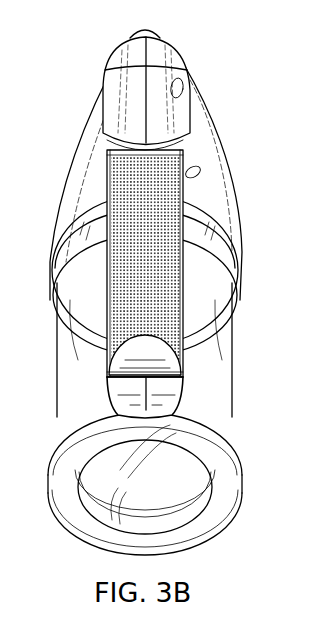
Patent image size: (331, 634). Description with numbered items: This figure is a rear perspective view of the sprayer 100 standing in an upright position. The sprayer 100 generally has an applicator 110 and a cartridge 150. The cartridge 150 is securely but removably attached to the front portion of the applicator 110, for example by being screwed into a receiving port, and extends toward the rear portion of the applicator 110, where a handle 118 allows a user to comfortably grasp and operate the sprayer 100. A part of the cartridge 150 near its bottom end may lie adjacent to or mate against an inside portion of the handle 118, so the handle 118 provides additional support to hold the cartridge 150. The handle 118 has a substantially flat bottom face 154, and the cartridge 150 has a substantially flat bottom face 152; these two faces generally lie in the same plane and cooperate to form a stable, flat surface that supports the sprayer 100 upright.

The sprayer 100 is at (78, 68).
The applicator 110 is at (205, 118).
The handle 118 is at (120, 184).
The cartridge 150 is at (232, 356).
The substantially flat bottom face 152 is at (218, 514).
The substantially flat bottom face 154 is at (170, 388).